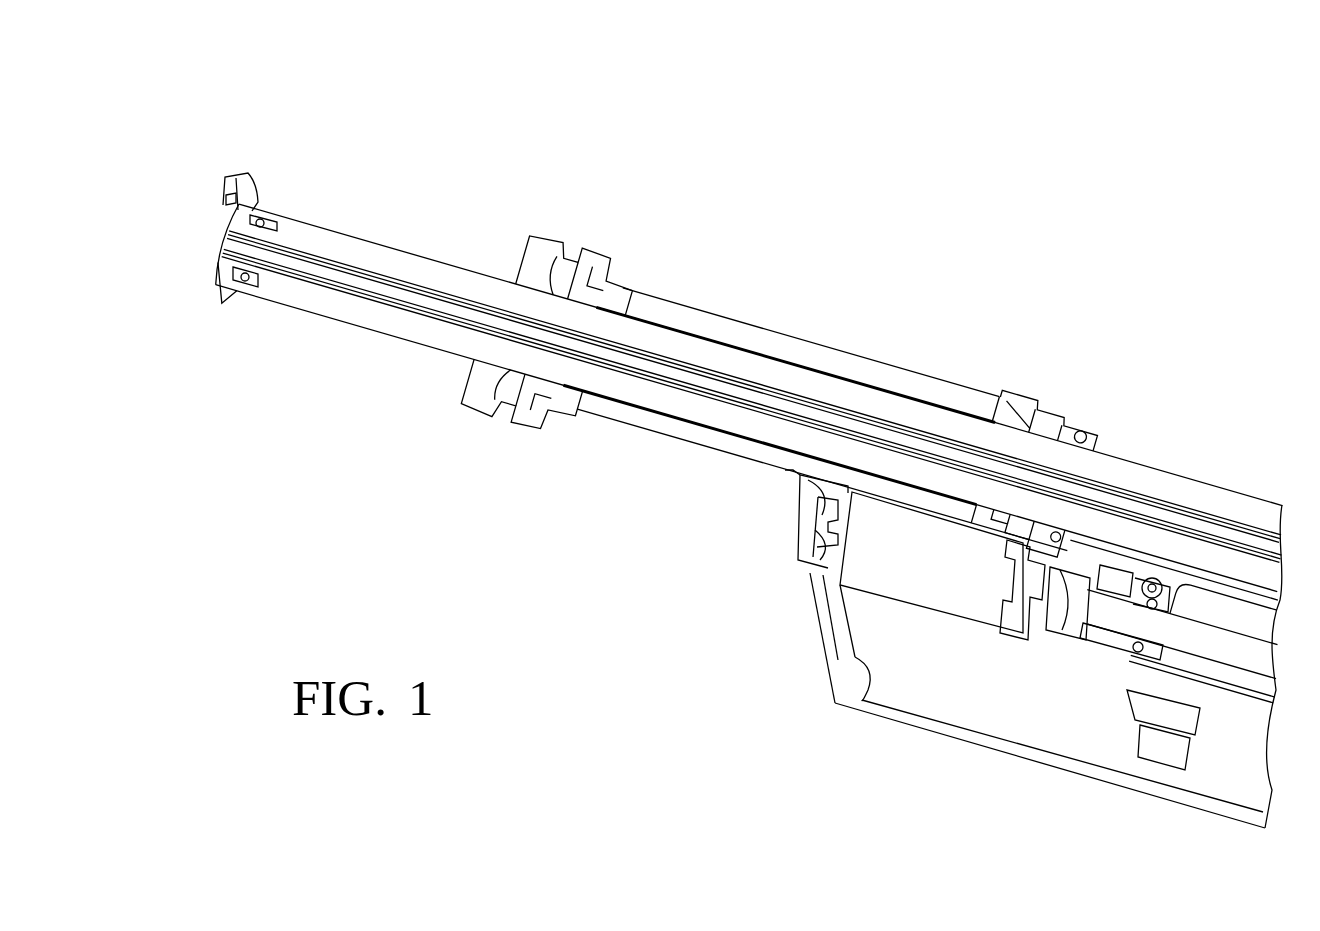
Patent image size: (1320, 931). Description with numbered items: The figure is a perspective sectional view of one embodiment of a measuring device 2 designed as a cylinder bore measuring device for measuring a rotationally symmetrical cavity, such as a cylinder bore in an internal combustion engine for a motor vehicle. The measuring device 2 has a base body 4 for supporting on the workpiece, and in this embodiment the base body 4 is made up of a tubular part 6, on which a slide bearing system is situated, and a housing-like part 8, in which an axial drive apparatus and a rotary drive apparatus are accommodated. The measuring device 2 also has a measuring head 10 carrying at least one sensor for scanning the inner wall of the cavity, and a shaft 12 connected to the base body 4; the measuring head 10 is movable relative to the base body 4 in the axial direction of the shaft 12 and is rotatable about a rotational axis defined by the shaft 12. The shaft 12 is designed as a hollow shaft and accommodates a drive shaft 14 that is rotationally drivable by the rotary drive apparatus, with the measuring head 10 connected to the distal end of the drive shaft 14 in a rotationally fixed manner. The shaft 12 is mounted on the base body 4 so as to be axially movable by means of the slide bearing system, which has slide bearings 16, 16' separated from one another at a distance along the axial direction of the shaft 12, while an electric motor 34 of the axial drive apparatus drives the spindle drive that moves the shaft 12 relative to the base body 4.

The measuring device 2 is at (859, 270).
The base body 4 is at (750, 564).
The tubular part 6 is at (635, 418).
The housing-like part 8 is at (1017, 750).
The measuring head 10 is at (263, 166).
The shaft 12 is at (1190, 490).
The drive shaft 14 is at (420, 300).
The slide bearing 16 is at (583, 303).
The slide bearing 16' is at (1060, 423).
The electric motor 34 is at (938, 598).